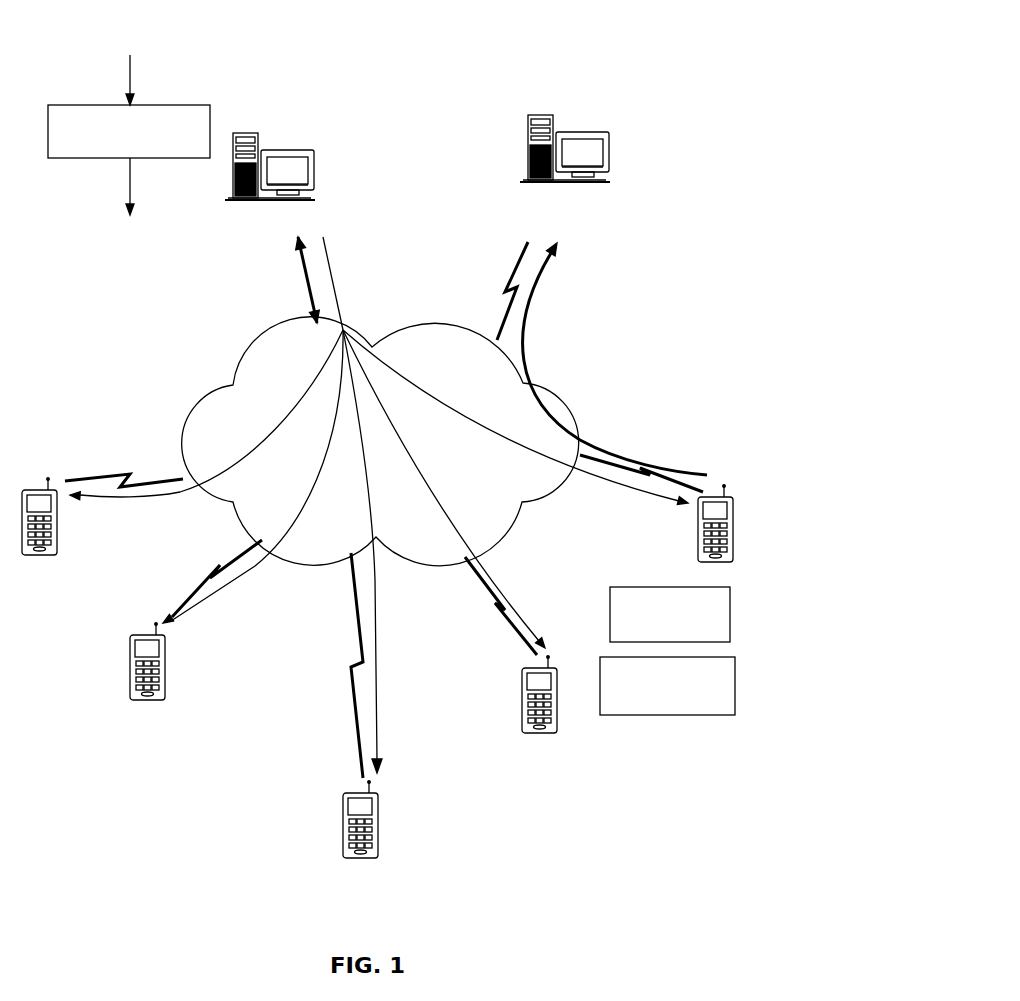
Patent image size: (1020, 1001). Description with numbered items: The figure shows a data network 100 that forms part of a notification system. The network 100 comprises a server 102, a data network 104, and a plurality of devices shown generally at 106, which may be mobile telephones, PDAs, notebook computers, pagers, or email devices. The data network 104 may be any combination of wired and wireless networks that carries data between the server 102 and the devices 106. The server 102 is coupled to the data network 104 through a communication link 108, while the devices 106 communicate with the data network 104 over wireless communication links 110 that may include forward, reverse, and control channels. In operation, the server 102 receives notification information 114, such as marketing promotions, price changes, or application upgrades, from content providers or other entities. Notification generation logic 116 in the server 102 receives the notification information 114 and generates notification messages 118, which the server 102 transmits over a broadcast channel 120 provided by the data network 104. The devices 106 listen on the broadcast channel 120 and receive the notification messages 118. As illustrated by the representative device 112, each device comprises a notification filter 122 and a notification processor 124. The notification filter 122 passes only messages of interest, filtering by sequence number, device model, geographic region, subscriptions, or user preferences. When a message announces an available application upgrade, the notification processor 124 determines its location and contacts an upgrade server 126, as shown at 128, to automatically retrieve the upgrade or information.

The data network 100 is at (615, 41).
The server 102 is at (311, 177).
The data network 104 is at (364, 441).
The devices 106 is at (289, 674).
The communication link 108 is at (271, 280).
The wireless communication links 110 is at (315, 665).
The device 112 is at (754, 523).
The notification information 114 is at (180, 74).
The notification generation logic 116 is at (181, 119).
The notification messages 118 is at (79, 186).
The broadcast channel 120 is at (379, 505).
The notification filter 122 is at (722, 612).
The notification processor 124 is at (719, 684).
The upgrade server 126 is at (603, 174).
The contact with upgrade server 128 is at (602, 358).